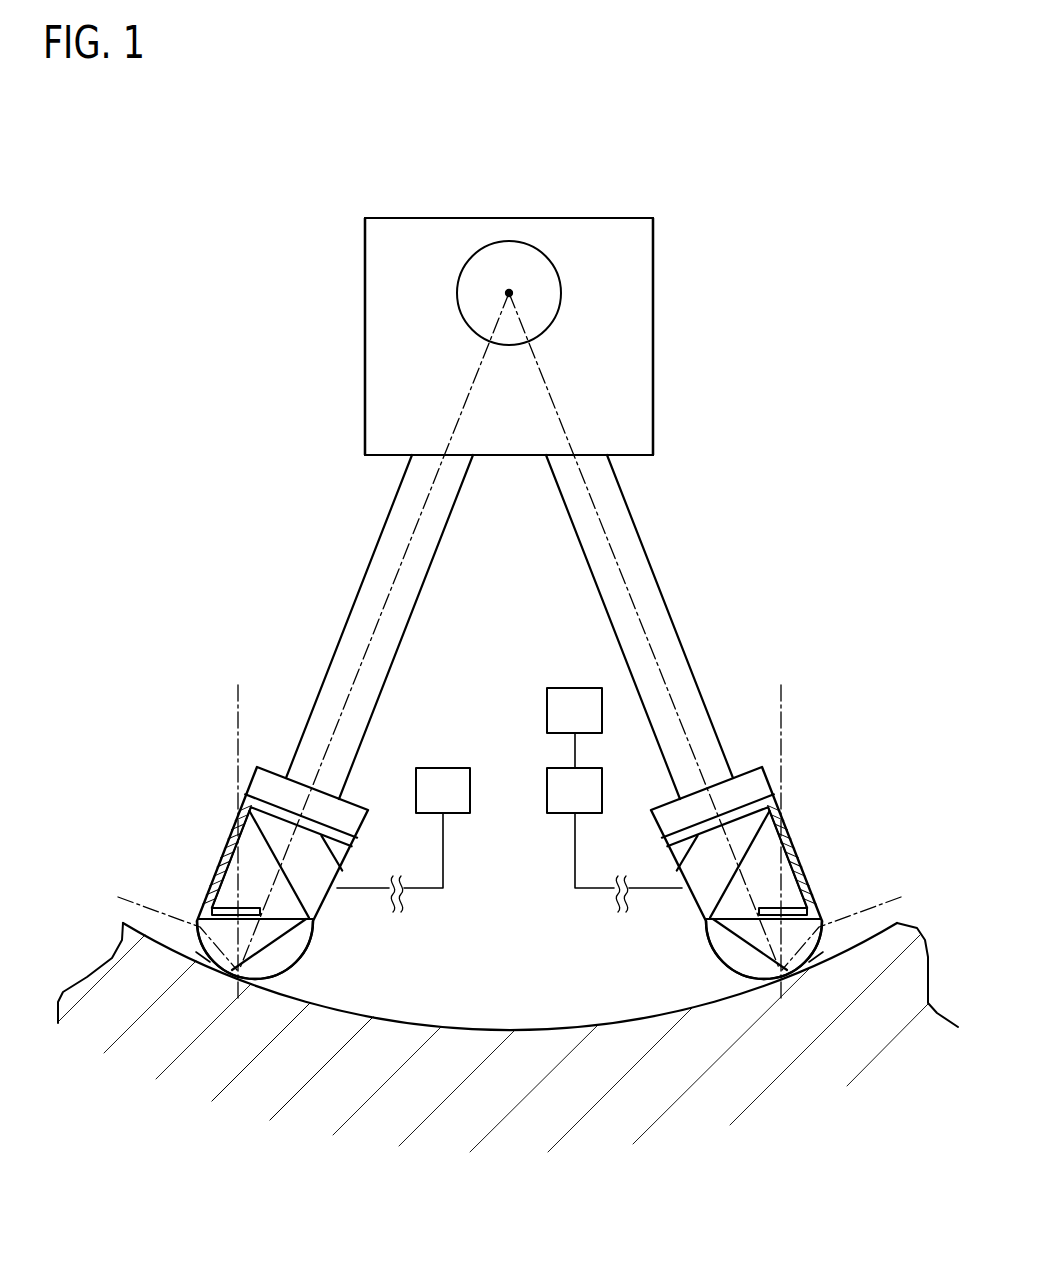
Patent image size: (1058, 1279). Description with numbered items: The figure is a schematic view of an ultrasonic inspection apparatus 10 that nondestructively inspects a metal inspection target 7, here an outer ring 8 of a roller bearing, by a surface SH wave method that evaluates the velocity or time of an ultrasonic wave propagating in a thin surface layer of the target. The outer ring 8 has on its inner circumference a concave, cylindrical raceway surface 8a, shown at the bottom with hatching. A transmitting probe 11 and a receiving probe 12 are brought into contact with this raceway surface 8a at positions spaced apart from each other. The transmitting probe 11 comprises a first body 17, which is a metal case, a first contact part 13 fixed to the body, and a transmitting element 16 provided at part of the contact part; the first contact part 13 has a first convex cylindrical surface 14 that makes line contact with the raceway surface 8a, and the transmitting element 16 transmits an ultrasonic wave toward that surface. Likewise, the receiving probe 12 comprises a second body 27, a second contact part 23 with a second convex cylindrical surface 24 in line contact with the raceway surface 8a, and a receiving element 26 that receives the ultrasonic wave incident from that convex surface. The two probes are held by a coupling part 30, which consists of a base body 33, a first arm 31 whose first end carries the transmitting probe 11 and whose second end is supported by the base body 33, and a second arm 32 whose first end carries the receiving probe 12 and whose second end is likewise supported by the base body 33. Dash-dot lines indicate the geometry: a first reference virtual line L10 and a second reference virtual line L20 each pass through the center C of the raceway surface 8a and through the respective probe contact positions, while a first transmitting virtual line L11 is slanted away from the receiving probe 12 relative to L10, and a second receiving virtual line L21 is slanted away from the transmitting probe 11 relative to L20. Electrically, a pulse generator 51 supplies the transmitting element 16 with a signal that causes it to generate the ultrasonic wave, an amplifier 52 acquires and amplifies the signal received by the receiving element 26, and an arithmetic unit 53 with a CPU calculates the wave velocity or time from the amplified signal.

The ultrasonic inspection apparatus 10 is at (655, 341).
The coupling part 30 is at (364, 353).
The base body 33 is at (604, 398).
The center of the raceway surface C is at (508, 292).
The first arm 31 is at (350, 630).
The second arm 32 is at (669, 630).
The first reference virtual line L10 is at (415, 527).
The second reference virtual line L20 is at (604, 527).
The transmitting probe 11 is at (218, 861).
The first body 17 is at (237, 825).
The transmitting element 16 is at (217, 903).
The first contact part 13 is at (288, 965).
The first convex cylindrical surface 14 is at (198, 958).
The first transmitting virtual line L11 is at (152, 925).
The receiving probe 12 is at (801, 861).
The second body 27 is at (782, 825).
The receiving element 26 is at (802, 903).
The second contact part 23 is at (731, 965).
The second convex cylindrical surface 24 is at (821, 958).
The second receiving virtual line L21 is at (866, 925).
The pulse generator 51 is at (440, 768).
The amplifier 52 is at (562, 813).
The arithmetic unit 53 is at (572, 688).
The raceway surface 8a is at (424, 1026).
The outer ring 8 is at (592, 1090).
The inspection target 7 is at (325, 1085).